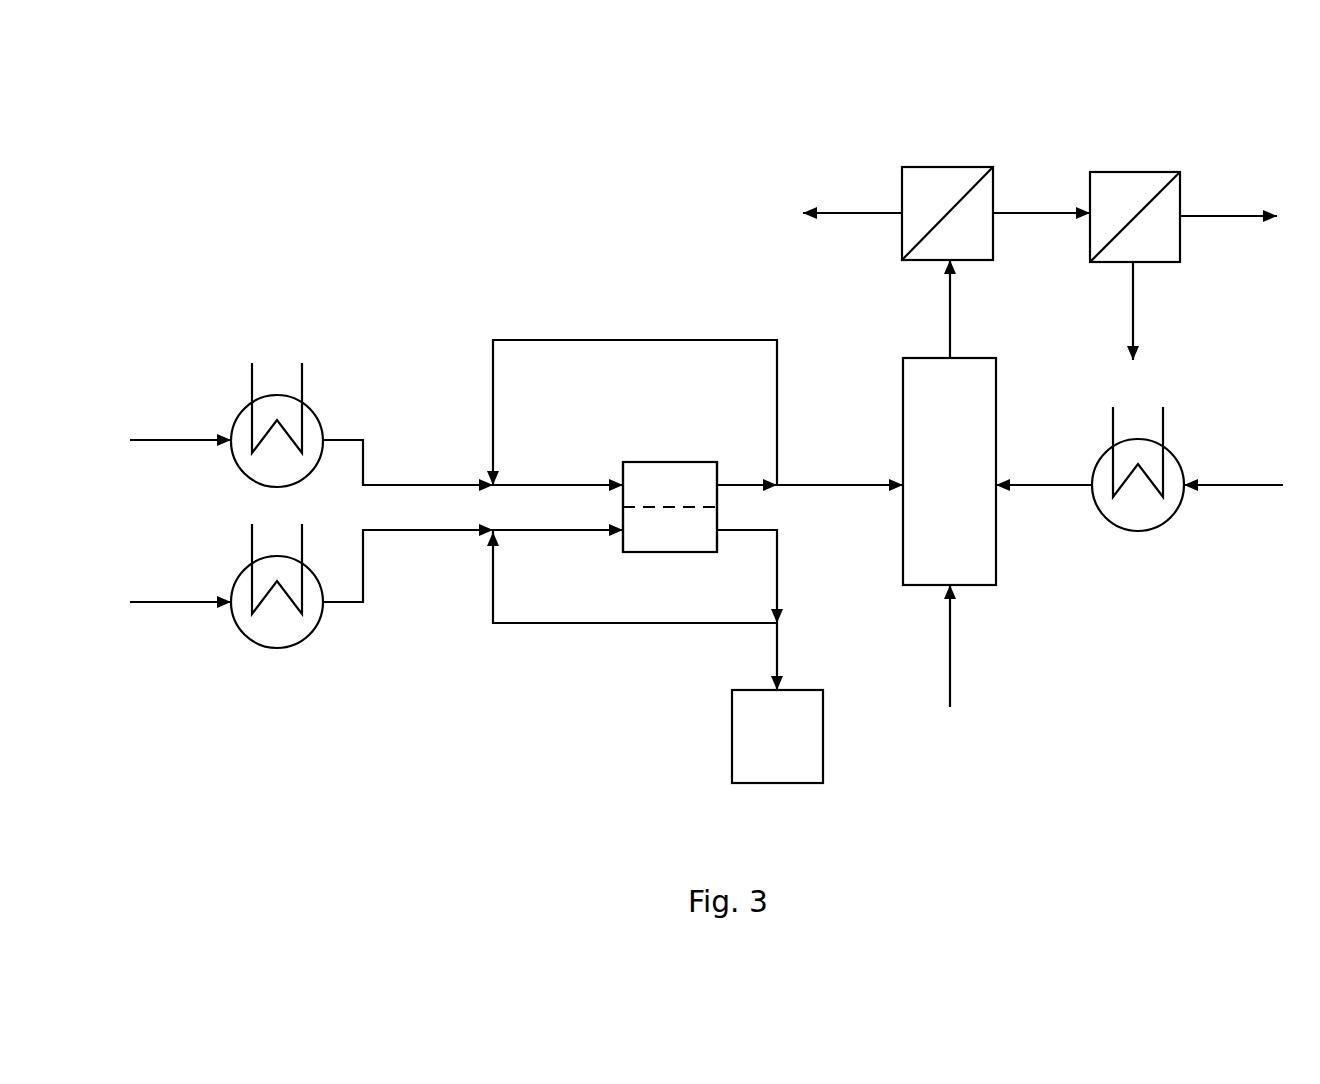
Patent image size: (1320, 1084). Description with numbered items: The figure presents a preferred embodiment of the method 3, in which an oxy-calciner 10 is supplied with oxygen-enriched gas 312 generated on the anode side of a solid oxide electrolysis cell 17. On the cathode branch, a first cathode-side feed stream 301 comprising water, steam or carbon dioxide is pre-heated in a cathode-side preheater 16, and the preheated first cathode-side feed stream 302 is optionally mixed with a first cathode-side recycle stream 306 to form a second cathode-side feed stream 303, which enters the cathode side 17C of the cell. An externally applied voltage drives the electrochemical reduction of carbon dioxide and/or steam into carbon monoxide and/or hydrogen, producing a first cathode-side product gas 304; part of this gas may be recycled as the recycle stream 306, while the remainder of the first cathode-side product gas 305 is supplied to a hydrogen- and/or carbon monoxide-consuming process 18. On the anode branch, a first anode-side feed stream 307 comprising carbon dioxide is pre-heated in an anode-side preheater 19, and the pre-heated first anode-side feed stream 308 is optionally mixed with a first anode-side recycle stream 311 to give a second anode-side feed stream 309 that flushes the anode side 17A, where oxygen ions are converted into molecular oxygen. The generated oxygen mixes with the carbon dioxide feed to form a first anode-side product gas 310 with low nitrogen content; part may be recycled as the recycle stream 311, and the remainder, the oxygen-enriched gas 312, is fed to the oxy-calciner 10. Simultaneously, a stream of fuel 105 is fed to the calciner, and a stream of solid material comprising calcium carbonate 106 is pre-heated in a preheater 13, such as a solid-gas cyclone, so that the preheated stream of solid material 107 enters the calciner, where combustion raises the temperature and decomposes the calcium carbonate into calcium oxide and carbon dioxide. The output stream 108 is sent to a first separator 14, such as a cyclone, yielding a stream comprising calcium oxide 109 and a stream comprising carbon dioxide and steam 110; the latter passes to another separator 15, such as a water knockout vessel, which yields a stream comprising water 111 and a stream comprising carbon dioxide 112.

The method 3 is at (340, 224).
The first anode-side feed stream 307 is at (182, 440).
The anode-side preheater 19 is at (247, 407).
The first cathode-side feed stream 301 is at (182, 598).
The cathode-side preheater 16 is at (248, 562).
The pre-heated first anode-side feed stream 308 is at (407, 483).
The preheated first cathode-side feed stream 302 is at (452, 532).
The first anode-side recycle stream 311 is at (653, 340).
The second anode-side feed stream 309 is at (568, 482).
The second cathode-side feed stream 303 is at (580, 530).
The solid oxide electrolysis cell 17 is at (627, 462).
The anode side 17A is at (677, 480).
The cathode side 17C is at (687, 537).
The first anode-side product gas 310 is at (757, 482).
The oxygen-enriched gas 312 is at (853, 482).
The first cathode-side recycle stream 306 is at (615, 625).
The first cathode-side product gas 304 is at (777, 588).
The remainder of the first cathode-side product gas 305 is at (777, 655).
The hydrogen- and/or carbon monoxide-consuming process 18 is at (732, 692).
The oxy-calciner 10 is at (905, 355).
The output stream 108 is at (953, 317).
The first separator 14 is at (902, 167).
The stream comprising calcium oxide 109 is at (860, 210).
The stream comprising carbon dioxide and steam 110 is at (1047, 210).
The separator 15 is at (1090, 172).
The stream comprising carbon dioxide 112 is at (1220, 213).
The stream comprising H2O 111 is at (1135, 310).
The stream of fuel 105 is at (952, 657).
The preheated stream of solid material 107 is at (1047, 478).
The preheater 13 is at (1170, 453).
The stream of solid material comprising calcium carbonate 106 is at (1235, 483).